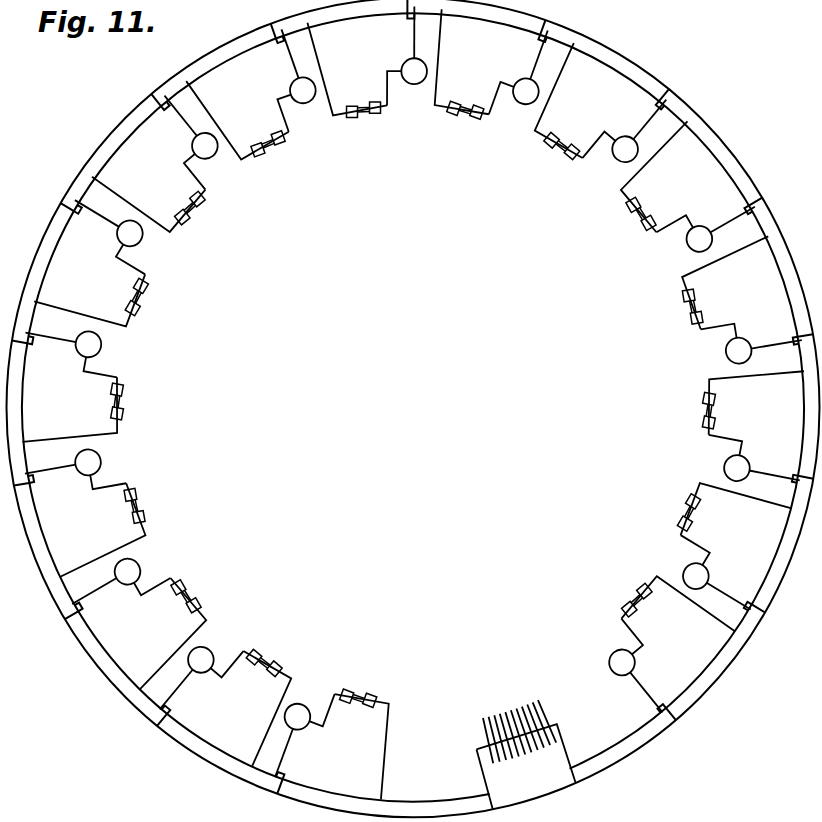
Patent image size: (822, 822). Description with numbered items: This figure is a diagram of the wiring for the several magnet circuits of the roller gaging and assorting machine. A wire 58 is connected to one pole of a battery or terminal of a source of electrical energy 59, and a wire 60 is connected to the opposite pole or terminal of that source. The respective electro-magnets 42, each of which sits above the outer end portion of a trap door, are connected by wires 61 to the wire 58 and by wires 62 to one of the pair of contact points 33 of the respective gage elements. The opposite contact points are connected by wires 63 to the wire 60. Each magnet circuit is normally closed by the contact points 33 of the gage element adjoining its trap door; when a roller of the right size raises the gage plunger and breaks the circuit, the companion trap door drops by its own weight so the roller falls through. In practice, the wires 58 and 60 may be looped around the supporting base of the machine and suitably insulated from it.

The wire 58 is at (134, 100).
The wire 60 is at (622, 67).
The wires 61 is at (412, 40).
The wires 62 is at (385, 85).
The wires 63 is at (330, 72).
The electro-magnet 42 is at (421, 72).
The contact points 33 is at (358, 118).
The source of electrical energy 59 is at (505, 718).